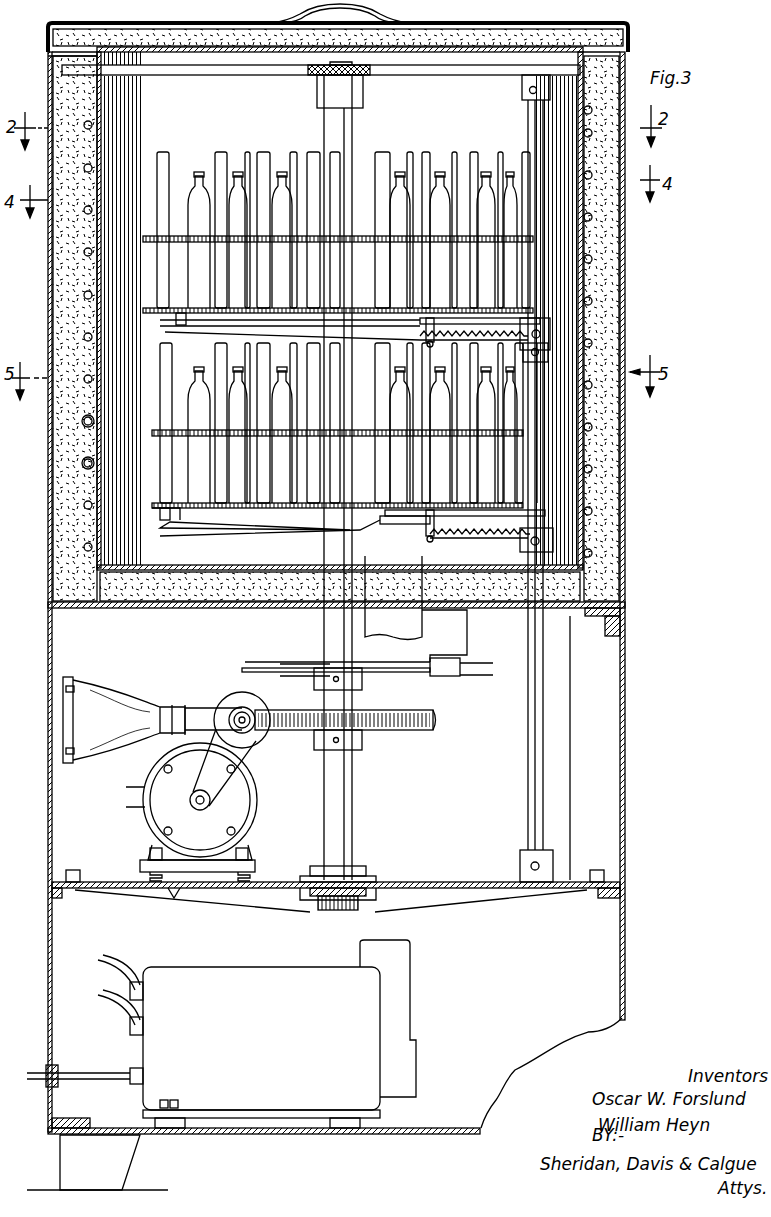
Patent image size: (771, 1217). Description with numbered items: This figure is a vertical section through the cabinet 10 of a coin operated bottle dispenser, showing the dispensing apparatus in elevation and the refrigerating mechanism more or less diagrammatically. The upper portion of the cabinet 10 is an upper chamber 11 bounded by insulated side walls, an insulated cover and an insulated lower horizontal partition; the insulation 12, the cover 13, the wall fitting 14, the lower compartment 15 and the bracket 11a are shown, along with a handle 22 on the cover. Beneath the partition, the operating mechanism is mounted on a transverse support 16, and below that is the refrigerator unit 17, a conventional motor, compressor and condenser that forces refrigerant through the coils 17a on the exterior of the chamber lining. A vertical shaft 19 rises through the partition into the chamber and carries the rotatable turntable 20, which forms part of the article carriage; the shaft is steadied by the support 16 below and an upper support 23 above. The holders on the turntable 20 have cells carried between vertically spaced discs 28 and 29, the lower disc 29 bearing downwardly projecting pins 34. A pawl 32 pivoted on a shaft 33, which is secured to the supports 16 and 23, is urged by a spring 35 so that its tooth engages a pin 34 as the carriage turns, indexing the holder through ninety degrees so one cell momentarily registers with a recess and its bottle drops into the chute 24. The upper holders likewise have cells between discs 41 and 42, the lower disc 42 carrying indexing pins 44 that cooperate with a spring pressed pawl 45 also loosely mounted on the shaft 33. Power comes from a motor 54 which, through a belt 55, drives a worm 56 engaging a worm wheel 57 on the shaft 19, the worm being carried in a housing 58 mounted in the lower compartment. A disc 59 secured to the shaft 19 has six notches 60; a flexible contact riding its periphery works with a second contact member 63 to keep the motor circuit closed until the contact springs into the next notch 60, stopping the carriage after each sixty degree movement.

The cabinet 10 is at (50, 497).
The upper chamber 11 is at (565, 245).
The rod bracket 11a is at (537, 313).
The insulation 12 is at (55, 307).
The lid 13 is at (545, 40).
The wall bracket 14 is at (555, 608).
The lower compartment 15 is at (567, 775).
The transverse support 16 is at (440, 882).
The refrigerator unit 17 is at (242, 968).
The coils 17a is at (95, 456).
The vertical shaft 19 is at (352, 808).
The turntable 20 is at (300, 530).
The handle 22 is at (340, 62).
The upper support 23 is at (455, 70).
The chute 24 is at (412, 626).
The upper disc 28 is at (520, 432).
The lower disc 29 is at (510, 503).
The pawl 32 is at (445, 531).
The shaft 33 is at (535, 458).
The pins 34 is at (166, 522).
The spring 35 is at (495, 535).
The upper disc 41 is at (520, 240).
The lower disc 42 is at (510, 308).
The indexing pins 44 is at (180, 318).
The spring pressed pawl 45 is at (462, 318).
The motor 54 is at (232, 810).
The belt 55 is at (240, 752).
The worm 56 is at (242, 720).
The worm wheel 57 is at (435, 720).
The horn 58 is at (240, 703).
The disc 59 is at (270, 668).
The notches 60 is at (305, 672).
The second contact member 63 is at (446, 676).